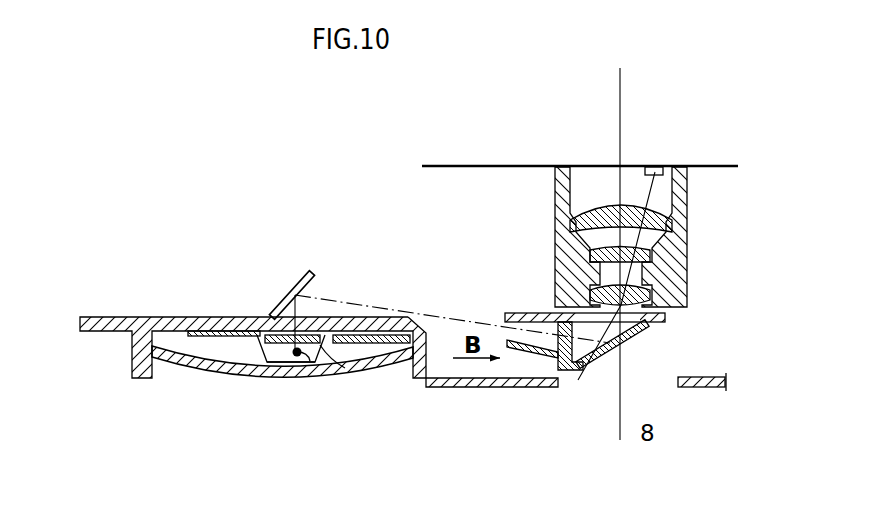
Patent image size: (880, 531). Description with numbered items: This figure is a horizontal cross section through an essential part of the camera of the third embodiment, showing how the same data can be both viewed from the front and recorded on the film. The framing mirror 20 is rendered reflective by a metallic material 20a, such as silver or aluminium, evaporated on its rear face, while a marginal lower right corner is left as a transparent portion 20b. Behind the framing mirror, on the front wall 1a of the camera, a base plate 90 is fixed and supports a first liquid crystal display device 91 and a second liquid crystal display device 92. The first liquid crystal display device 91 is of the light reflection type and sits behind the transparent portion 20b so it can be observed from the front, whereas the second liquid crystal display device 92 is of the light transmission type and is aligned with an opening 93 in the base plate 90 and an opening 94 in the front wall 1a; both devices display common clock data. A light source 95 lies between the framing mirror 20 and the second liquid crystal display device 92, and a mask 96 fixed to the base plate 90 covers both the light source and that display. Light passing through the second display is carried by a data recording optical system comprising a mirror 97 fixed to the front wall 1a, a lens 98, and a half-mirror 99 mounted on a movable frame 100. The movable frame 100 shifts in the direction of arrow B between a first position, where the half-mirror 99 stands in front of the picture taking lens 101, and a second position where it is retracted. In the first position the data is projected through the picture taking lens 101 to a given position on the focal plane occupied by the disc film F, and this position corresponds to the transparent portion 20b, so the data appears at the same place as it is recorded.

The front wall 1a is at (495, 387).
The framing mirror 20 is at (245, 362).
The metallic material 20a is at (200, 355).
The transparent portion 20b is at (367, 375).
The base plate 90 is at (197, 317).
The first liquid crystal display device 91 is at (385, 320).
The second liquid crystal display device 92 is at (278, 362).
The opening of base plate 93 is at (313, 317).
The opening of front wall 94 is at (313, 322).
The light source 95 is at (300, 357).
The mask 96 is at (368, 362).
The mirror 97 is at (295, 287).
The lens 98 is at (558, 330).
The half-mirror 99 is at (640, 335).
The movable frame 100 is at (577, 372).
The picture taking lens 101 is at (680, 208).
The disc film F is at (470, 166).